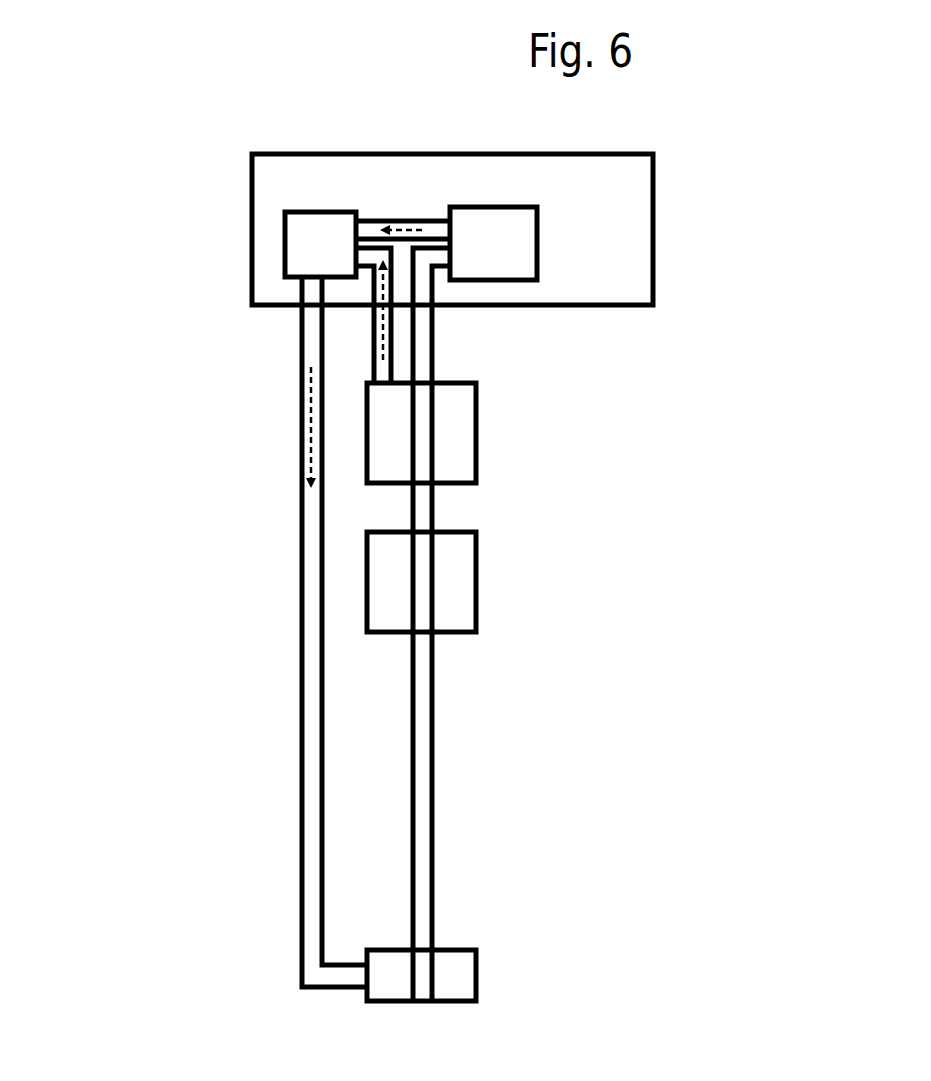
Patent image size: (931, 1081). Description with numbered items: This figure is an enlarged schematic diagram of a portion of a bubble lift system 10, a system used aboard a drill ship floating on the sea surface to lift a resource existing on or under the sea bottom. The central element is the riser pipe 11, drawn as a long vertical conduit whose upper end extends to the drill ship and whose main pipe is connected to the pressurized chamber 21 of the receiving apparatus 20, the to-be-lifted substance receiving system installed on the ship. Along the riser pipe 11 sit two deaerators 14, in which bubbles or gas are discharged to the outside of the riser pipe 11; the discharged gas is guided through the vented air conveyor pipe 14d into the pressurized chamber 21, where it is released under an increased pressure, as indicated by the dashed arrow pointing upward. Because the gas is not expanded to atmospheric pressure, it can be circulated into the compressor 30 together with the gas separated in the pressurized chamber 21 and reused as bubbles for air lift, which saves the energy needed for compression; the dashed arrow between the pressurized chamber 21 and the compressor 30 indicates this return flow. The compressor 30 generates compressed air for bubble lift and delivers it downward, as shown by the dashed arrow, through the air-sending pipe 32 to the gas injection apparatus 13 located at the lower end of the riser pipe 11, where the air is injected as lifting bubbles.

The bubble lift system 10 is at (236, 506).
The riser pipe 11 is at (433, 795).
The gas injection apparatus 13 is at (477, 978).
The deaerator 14 is at (477, 432).
The vented air conveyor pipe 14d is at (374, 330).
The receiving apparatus 20 is at (620, 215).
The pressurized chamber 21 is at (537, 255).
The compressor 30 is at (285, 255).
The air-sending pipe 32 is at (300, 648).